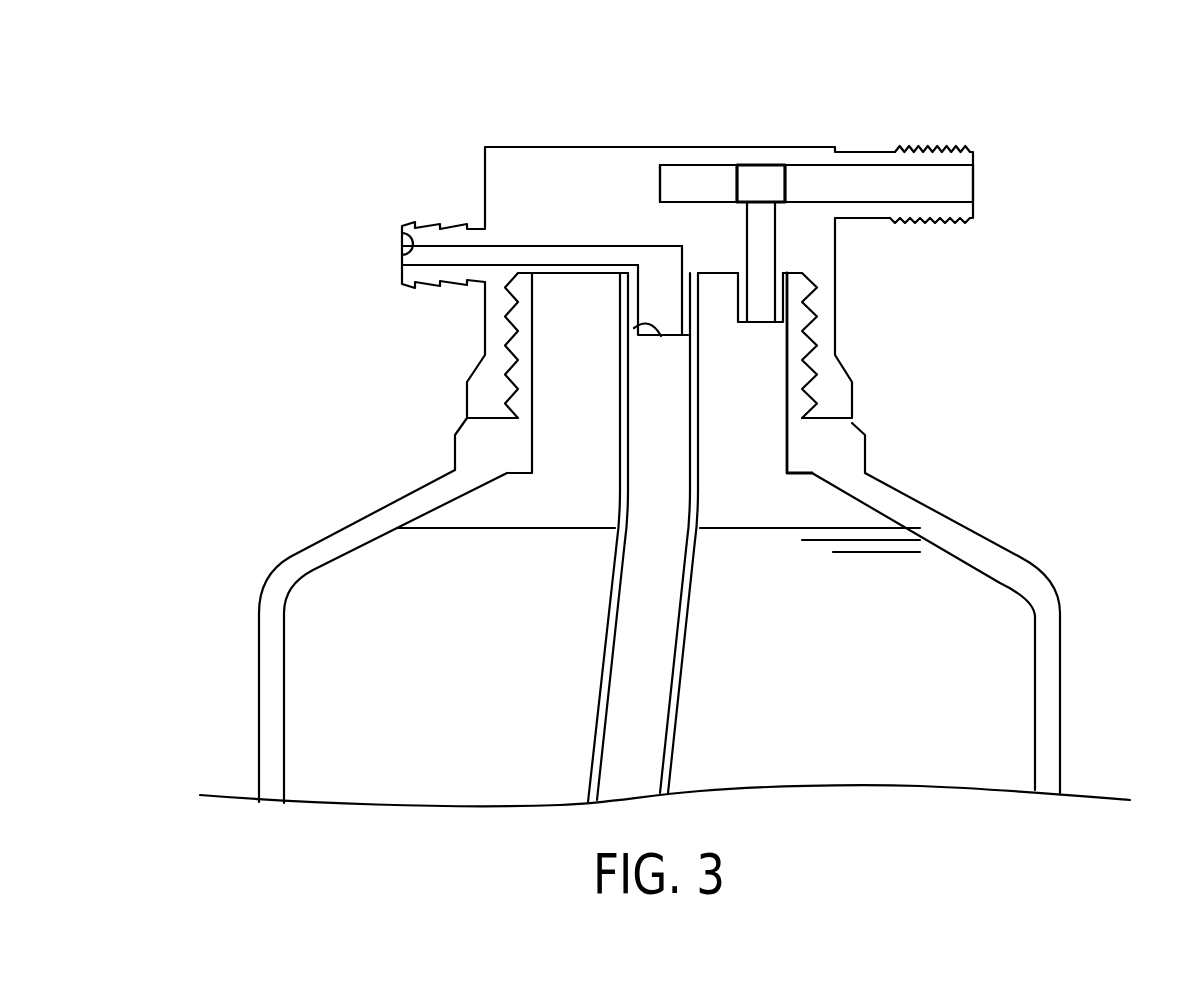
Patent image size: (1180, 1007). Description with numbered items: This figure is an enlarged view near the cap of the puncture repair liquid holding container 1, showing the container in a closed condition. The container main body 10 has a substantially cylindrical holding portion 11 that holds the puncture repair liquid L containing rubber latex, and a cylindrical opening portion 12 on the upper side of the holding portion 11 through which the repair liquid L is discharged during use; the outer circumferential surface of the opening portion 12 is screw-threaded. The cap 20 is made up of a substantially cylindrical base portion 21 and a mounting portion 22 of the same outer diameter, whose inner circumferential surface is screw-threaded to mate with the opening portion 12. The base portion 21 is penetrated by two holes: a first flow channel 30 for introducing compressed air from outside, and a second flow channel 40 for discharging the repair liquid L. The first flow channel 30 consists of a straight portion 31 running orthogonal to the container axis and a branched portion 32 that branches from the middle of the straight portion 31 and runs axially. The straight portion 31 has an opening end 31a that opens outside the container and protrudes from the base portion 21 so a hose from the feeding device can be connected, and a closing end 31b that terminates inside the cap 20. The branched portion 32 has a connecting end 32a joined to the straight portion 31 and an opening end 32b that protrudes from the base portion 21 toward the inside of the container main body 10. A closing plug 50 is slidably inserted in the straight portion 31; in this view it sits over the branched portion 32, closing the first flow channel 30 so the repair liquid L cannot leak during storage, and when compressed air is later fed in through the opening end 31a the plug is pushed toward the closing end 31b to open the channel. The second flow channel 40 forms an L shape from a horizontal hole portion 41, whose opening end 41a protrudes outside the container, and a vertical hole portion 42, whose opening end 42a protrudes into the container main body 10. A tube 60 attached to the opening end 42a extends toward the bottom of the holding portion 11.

The holding container 1 is at (618, 97).
The container main body 10 is at (992, 527).
The holding portion 11 is at (1047, 757).
The opening portion 12 is at (787, 380).
The cap 20 is at (515, 145).
The base portion 21 is at (573, 167).
The mounting portion 22 is at (823, 362).
The first flow channel 30 is at (988, 228).
The straight portion 31 is at (858, 183).
The opening end 31a is at (975, 183).
The closing end 31b is at (658, 183).
The branched portion 32 is at (765, 235).
The connecting end 32a is at (742, 208).
The opening end 32b is at (763, 317).
The second flow channel 40 is at (372, 295).
The horizontal hole portion 41 is at (495, 257).
The opening end 41a is at (400, 234).
The vertical hole portion 42 is at (655, 302).
The opening end 42a is at (632, 326).
The closing plug 50 is at (762, 187).
The tube 60 is at (602, 705).
The puncture repair liquid L is at (988, 627).